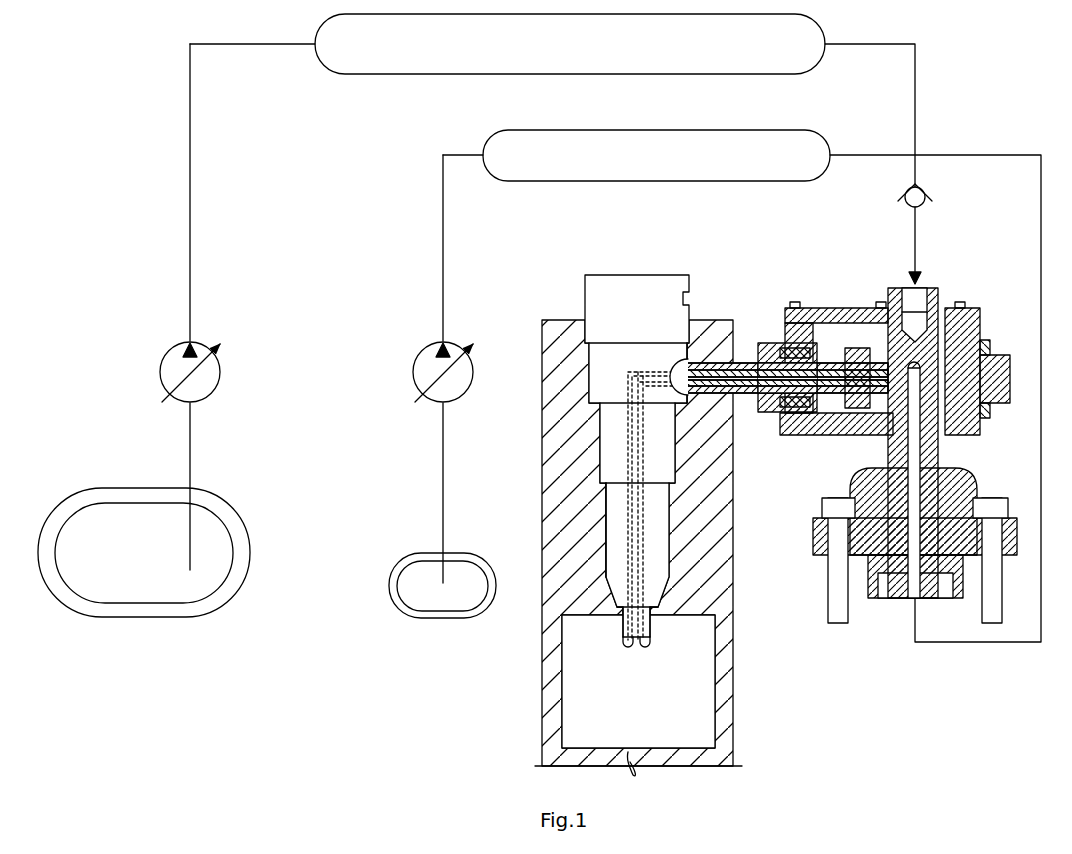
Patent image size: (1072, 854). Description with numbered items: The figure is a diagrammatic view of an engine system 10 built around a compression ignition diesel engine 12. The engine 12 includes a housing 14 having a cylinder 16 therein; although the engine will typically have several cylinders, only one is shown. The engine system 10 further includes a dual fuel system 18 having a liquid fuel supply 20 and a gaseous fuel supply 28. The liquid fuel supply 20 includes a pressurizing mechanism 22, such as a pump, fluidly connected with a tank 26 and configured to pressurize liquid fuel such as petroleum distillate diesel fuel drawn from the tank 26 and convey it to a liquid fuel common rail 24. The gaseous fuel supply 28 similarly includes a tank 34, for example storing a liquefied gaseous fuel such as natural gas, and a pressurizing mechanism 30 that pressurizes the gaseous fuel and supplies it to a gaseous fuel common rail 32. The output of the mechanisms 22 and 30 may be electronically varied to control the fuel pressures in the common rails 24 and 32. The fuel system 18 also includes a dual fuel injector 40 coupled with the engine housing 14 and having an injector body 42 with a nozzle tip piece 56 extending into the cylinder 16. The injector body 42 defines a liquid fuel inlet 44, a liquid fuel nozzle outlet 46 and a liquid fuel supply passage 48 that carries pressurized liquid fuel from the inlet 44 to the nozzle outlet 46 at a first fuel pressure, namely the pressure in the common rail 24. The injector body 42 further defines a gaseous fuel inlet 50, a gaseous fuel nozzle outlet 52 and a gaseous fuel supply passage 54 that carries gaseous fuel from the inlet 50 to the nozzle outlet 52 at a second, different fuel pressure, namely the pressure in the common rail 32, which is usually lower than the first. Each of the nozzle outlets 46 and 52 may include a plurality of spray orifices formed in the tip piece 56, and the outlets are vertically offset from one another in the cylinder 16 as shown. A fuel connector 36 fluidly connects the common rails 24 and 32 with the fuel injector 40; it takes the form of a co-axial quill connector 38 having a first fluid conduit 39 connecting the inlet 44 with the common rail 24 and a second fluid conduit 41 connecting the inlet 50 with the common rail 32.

The engine system 10 is at (140, 128).
The compression ignition diesel engine 12 is at (482, 716).
The housing 14 is at (542, 650).
The cylinder 16 is at (713, 660).
The dual fuel system 18 is at (372, 436).
The liquid fuel supply 20 is at (404, 520).
The pressurizing mechanism 22 is at (412, 372).
The liquid fuel common rail 24 is at (776, 182).
The tank 26 is at (421, 619).
The gaseous fuel supply 28 is at (266, 561).
The pressurizing mechanism 30 is at (223, 372).
The gaseous fuel common rail 32 is at (776, 75).
The tank 34 is at (181, 618).
The fuel connector 36 is at (812, 455).
The co-axial quill connector 38 is at (758, 344).
The first fluid conduit 39 is at (766, 410).
The dual fuel injector 40 is at (590, 275).
The second fluid conduit 41 is at (744, 362).
The injector body 42 is at (548, 366).
The liquid fuel inlet 44 is at (692, 345).
The liquid fuel nozzle outlet 46 is at (628, 648).
The liquid fuel supply passage 48 is at (626, 470).
The gaseous fuel inlet 50 is at (678, 367).
The gaseous fuel nozzle outlet 52 is at (644, 648).
The gaseous fuel supply passage 54 is at (646, 524).
The nozzle tip piece 56 is at (622, 624).